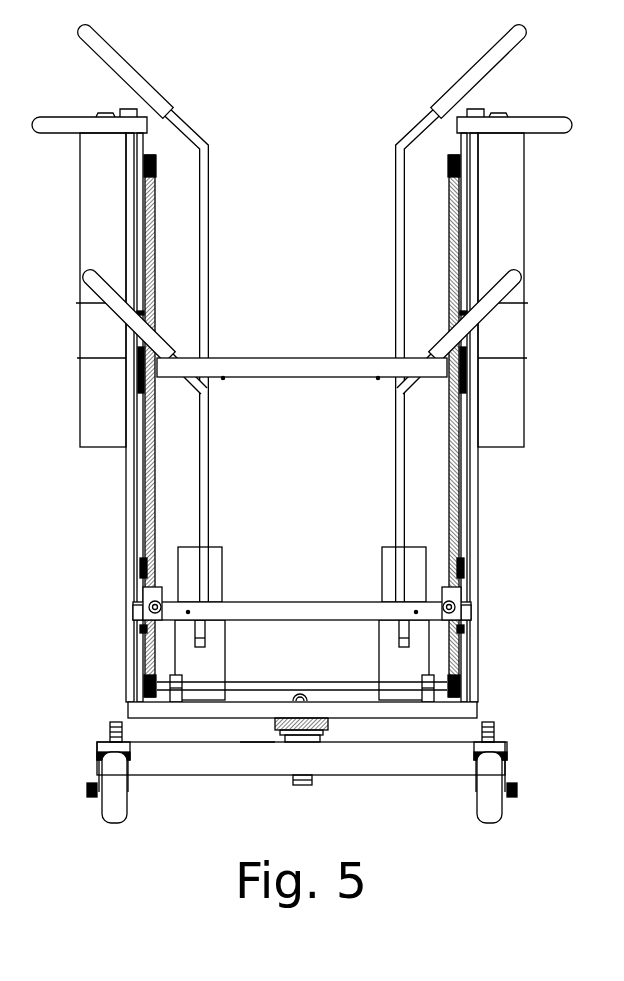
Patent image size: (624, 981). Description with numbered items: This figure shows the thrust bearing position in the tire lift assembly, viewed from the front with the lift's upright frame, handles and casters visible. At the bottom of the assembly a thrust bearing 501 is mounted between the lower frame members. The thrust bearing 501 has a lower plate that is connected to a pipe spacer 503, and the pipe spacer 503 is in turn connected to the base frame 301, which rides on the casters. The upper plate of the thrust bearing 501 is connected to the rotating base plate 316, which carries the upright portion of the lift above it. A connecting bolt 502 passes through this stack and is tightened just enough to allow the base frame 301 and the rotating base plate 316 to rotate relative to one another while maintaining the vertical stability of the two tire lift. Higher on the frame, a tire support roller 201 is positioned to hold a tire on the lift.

The tire support roller 201 is at (138, 597).
The rotating base plate 316 is at (470, 710).
The base frame 301 is at (192, 768).
The pipe spacer 503 is at (258, 742).
The connecting bolt 502 is at (308, 782).
The thrust bearing 501 is at (332, 725).